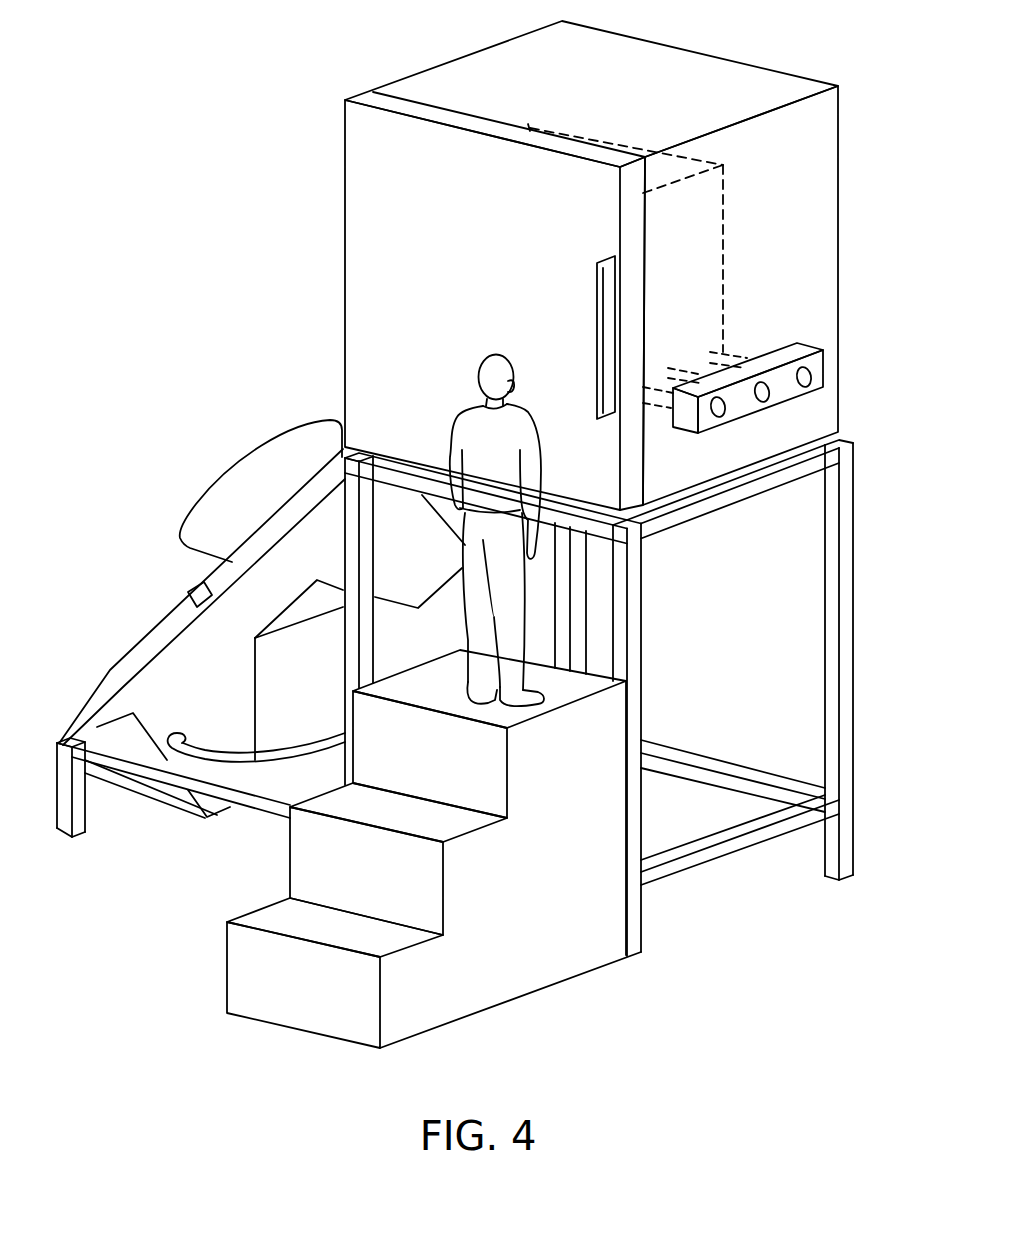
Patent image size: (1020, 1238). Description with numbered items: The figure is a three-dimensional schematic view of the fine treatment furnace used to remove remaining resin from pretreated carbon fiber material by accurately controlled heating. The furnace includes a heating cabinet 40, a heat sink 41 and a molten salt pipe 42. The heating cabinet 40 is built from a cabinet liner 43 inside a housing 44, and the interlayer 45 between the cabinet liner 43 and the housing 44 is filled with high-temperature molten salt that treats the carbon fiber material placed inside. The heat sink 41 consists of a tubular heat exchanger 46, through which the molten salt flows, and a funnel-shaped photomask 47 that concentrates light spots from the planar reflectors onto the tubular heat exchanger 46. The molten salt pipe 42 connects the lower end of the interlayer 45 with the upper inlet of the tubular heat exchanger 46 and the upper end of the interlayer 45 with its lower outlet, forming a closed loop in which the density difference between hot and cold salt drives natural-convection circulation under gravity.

The heating cabinet 40 is at (355, 212).
The heat sink 41 is at (127, 650).
The molten salt pipe 42 is at (270, 750).
The cabinet liner 43 is at (717, 197).
The housing 44 is at (838, 243).
The interlayer 45 is at (788, 265).
The tubular heat exchanger 46 is at (157, 698).
The funnel-shaped photomask 47 is at (255, 450).